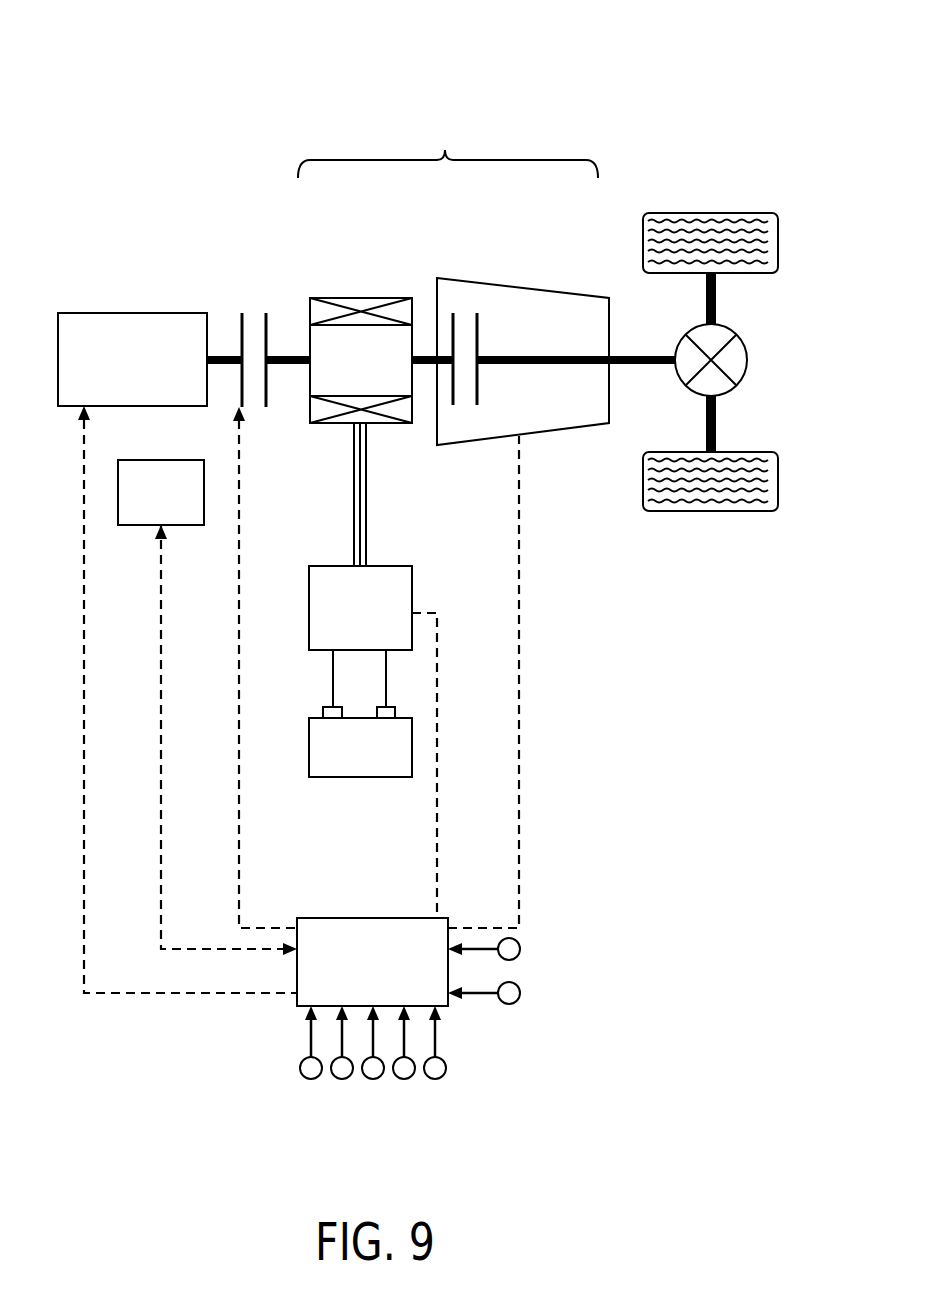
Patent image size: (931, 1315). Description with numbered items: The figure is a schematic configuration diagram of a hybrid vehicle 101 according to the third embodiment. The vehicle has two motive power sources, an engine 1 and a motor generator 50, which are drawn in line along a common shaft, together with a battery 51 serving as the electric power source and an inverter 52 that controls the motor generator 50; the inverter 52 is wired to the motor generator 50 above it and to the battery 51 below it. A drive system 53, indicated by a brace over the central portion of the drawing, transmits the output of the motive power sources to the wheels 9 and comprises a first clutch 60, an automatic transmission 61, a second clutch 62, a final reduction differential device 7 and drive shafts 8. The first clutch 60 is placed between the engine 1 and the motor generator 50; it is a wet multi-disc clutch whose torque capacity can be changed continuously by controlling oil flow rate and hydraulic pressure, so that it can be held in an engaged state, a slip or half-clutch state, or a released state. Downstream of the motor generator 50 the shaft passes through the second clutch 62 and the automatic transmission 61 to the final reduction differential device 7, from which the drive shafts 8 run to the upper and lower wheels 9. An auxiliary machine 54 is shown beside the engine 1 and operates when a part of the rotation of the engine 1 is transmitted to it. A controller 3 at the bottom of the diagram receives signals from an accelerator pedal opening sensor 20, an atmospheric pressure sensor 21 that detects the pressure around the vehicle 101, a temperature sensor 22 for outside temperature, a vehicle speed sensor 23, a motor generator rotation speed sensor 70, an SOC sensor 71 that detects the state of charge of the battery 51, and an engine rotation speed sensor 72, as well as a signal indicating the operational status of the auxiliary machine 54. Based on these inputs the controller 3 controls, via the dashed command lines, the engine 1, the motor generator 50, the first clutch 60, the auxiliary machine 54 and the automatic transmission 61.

The vehicle 101 is at (85, 114).
The engine 1 is at (168, 313).
The first clutch 60 is at (267, 333).
The motor generator 50 is at (360, 298).
The drive system 53 is at (448, 146).
The automatic transmission 61 is at (437, 292).
The second clutch 62 is at (453, 325).
The final reduction differential device 7 is at (687, 336).
The drive shafts 8 is at (706, 290).
The wheels 9 is at (733, 213).
The auxiliary machine 54 is at (151, 460).
The inverter 52 is at (309, 590).
The battery 51 is at (309, 740).
The controller 3 is at (376, 918).
The engine rotation speed sensor 72 is at (520, 949).
The SOC sensor 71 is at (520, 993).
The accelerator pedal opening sensor 20 is at (311, 1079).
The atmospheric pressure sensor 21 is at (342, 1079).
The temperature sensor 22 is at (373, 1079).
The vehicle speed sensor 23 is at (404, 1079).
The motor generator rotation speed sensor 70 is at (435, 1079).